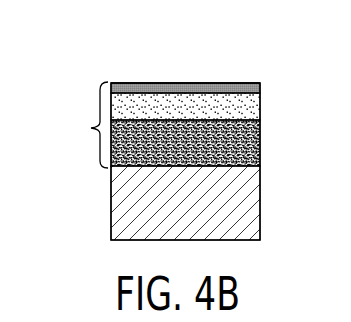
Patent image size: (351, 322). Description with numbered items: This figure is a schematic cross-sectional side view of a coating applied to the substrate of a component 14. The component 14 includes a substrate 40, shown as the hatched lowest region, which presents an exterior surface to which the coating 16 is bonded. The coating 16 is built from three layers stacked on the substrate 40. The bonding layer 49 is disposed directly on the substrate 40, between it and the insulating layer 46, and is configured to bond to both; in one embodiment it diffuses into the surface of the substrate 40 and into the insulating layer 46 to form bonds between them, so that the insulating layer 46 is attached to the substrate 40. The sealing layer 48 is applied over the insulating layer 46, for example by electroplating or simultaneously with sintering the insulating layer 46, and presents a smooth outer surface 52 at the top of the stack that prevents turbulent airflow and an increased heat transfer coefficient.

The component 14 is at (96, 207).
The coating 16 is at (86, 125).
The substrate 40 is at (247, 190).
The insulating layer 46 is at (248, 115).
The sealing layer 48 is at (261, 83).
The bonding layer 49 is at (250, 148).
The outer surface 52 is at (212, 82).